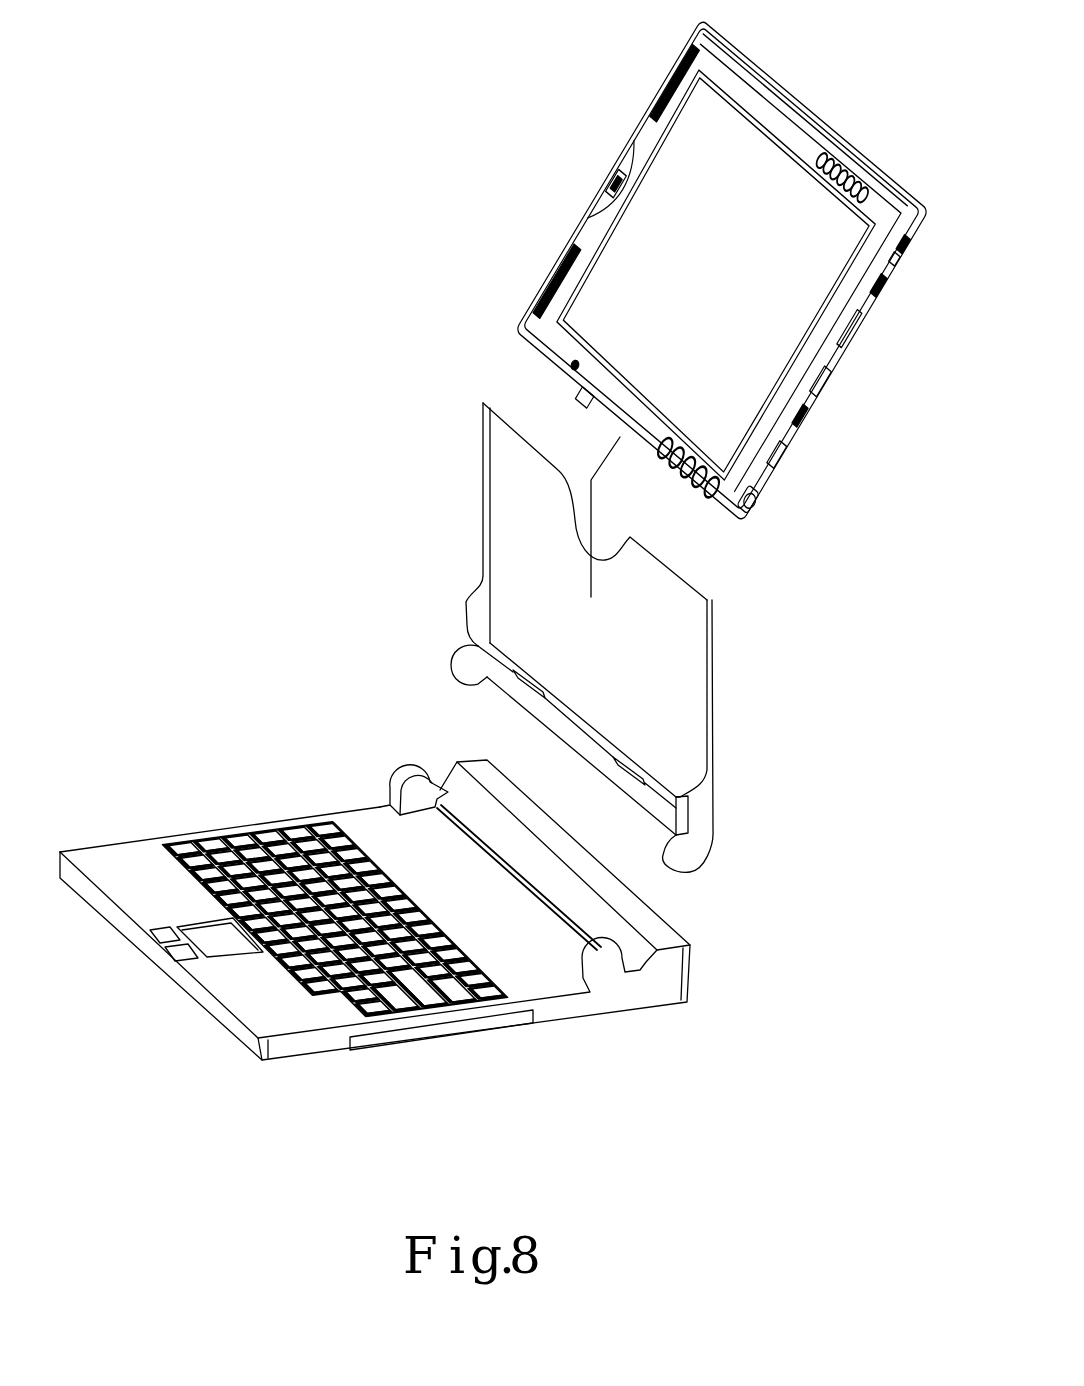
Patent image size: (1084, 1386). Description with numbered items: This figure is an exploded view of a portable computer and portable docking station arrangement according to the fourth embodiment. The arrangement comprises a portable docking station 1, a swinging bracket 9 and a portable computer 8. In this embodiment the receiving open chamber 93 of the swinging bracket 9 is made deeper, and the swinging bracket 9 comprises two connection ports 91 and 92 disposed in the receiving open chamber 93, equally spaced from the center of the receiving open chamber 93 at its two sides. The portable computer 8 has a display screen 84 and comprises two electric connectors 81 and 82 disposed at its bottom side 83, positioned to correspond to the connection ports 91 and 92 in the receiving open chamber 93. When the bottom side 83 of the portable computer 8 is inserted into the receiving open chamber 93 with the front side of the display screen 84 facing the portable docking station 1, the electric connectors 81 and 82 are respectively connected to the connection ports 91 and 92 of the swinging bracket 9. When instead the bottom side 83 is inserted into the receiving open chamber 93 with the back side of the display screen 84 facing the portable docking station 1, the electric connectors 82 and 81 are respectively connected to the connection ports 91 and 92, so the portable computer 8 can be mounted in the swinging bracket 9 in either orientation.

The portable docking station 1 is at (290, 1030).
The portable computer 8 is at (700, 276).
The electric connector 81 is at (581, 403).
The electric connector 82 is at (675, 477).
The bottom side 83 is at (543, 358).
The display screen 84 is at (822, 197).
The swinging bracket 9 is at (583, 637).
The connection port 91 is at (520, 683).
The connection port 92 is at (620, 780).
The receiving open chamber 93 is at (480, 634).